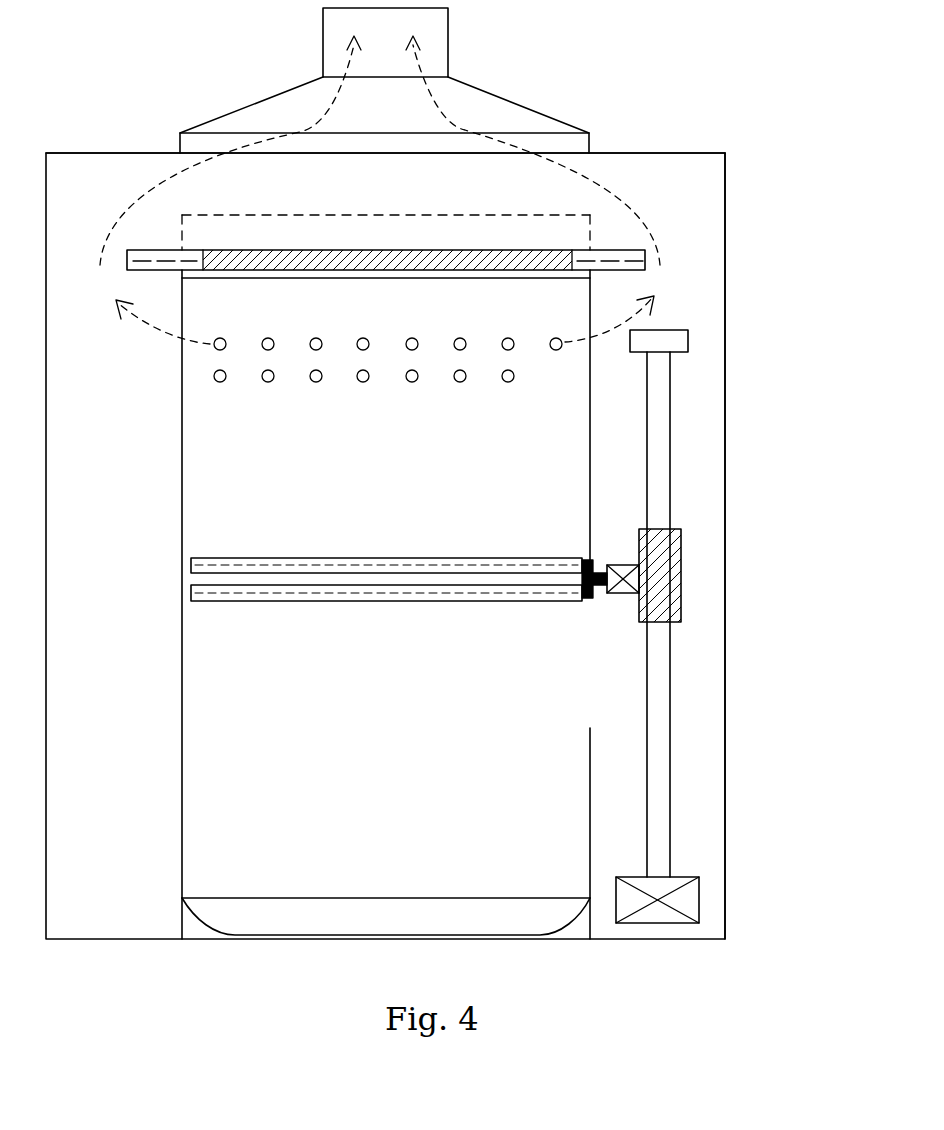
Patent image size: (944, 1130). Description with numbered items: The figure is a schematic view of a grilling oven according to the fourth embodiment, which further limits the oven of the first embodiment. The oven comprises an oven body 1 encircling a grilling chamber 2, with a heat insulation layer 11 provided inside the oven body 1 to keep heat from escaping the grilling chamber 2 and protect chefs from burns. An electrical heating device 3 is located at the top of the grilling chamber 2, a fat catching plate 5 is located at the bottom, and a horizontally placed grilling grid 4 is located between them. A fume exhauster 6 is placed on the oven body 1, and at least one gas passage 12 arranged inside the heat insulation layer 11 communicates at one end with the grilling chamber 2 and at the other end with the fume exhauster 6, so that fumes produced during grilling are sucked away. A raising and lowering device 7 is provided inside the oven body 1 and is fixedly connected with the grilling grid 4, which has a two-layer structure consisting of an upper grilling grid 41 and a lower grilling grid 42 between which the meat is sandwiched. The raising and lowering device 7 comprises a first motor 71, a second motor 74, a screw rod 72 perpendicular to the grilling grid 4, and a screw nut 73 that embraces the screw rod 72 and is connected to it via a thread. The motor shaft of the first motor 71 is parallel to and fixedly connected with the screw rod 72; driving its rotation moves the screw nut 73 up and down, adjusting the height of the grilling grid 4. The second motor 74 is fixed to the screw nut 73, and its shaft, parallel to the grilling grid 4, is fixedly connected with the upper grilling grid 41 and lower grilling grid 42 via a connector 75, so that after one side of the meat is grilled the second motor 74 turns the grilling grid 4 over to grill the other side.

The oven body 1 is at (451, 546).
The heat insulation layer 11 is at (663, 275).
The gas passage 12 is at (667, 193).
The grilling chamber 2 is at (535, 452).
The electrical heating device 3 is at (485, 265).
The grilling grid 4 is at (386, 653).
The upper grilling grid 41 is at (345, 570).
The lower grilling grid 42 is at (432, 600).
The fat catching plate 5 is at (463, 917).
The fume exhauster 6 is at (427, 43).
The raising and lowering device 7 is at (717, 626).
The first motor 71 is at (686, 905).
The screw rod 72 is at (653, 835).
The screw nut 73 is at (660, 553).
The second motor 74 is at (633, 582).
The connector 75 is at (593, 597).